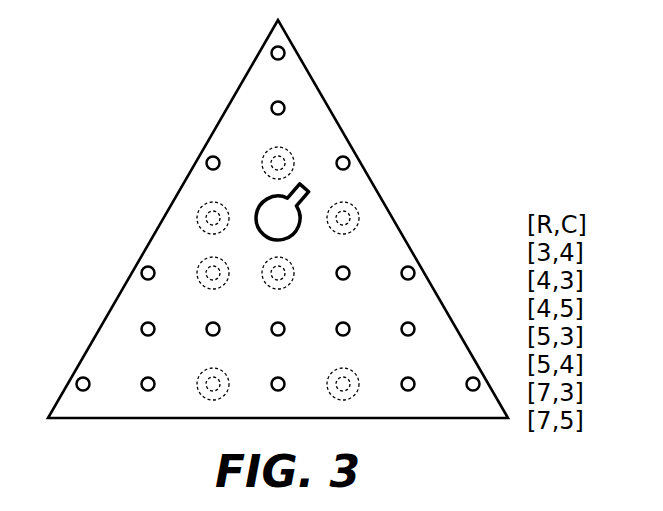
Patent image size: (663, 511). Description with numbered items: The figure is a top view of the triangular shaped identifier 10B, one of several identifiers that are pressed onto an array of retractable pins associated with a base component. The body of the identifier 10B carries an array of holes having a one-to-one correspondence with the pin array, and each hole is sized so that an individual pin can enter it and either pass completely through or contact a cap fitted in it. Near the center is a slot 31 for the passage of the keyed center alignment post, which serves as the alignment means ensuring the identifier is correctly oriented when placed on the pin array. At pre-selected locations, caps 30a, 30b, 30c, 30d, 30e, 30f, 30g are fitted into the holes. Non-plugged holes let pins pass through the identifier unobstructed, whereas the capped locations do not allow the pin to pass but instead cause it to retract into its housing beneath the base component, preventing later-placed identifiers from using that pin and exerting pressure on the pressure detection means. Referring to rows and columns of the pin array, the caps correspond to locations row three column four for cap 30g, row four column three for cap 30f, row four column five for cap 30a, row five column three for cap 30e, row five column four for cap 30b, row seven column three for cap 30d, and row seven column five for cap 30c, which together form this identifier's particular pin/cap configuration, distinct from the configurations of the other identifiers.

The triangular shaped identifier 10B is at (332, 117).
The cap 30a is at (358, 212).
The cap 30b is at (264, 281).
The cap 30c is at (352, 372).
The cap 30d is at (202, 372).
The cap 30e is at (200, 260).
The cap 30f is at (203, 209).
The cap 30g is at (267, 157).
The slot 31 is at (292, 227).